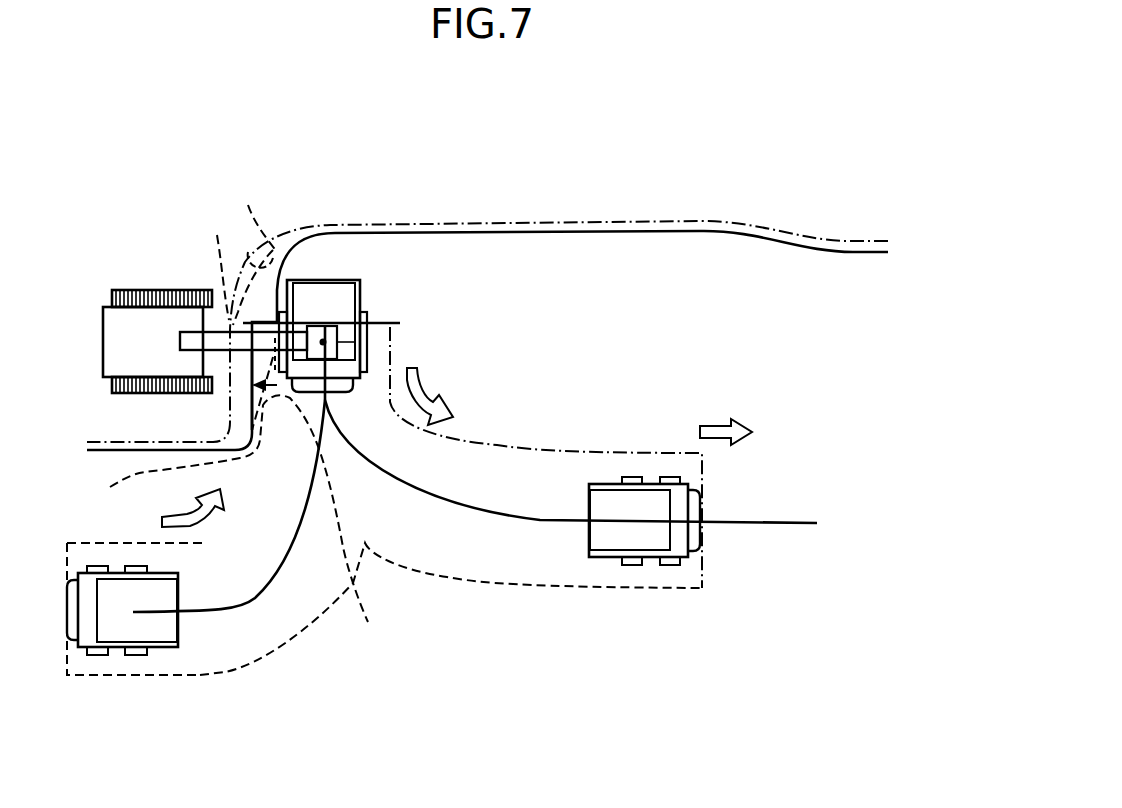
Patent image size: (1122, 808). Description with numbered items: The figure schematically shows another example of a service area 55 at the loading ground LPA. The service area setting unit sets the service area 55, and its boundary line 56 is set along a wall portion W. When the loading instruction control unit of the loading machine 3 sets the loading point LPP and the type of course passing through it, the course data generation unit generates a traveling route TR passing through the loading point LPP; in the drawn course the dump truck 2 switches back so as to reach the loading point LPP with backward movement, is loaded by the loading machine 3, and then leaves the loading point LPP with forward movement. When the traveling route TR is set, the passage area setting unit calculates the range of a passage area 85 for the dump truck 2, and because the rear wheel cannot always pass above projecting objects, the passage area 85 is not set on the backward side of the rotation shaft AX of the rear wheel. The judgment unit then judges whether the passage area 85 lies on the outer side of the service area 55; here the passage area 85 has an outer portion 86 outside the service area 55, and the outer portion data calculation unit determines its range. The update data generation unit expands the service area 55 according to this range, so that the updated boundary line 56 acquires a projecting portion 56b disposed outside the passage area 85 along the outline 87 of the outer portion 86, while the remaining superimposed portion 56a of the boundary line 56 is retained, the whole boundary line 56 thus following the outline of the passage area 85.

The dump truck 2 is at (95, 655).
The loading machine 3 is at (108, 302).
The service area 55 is at (713, 252).
The boundary line 56 is at (603, 228).
The superimposed portion 56a is at (216, 508).
The projecting portion 56b is at (250, 400).
The passage area 85 is at (627, 590).
The outer portion 86 is at (451, 609).
The outline 87 is at (213, 265).
The wall portion W is at (255, 305).
The rotation shaft AX is at (401, 322).
The loading point LPP is at (323, 342).
The loading ground LPA is at (852, 150).
The traveling route TR is at (212, 612).